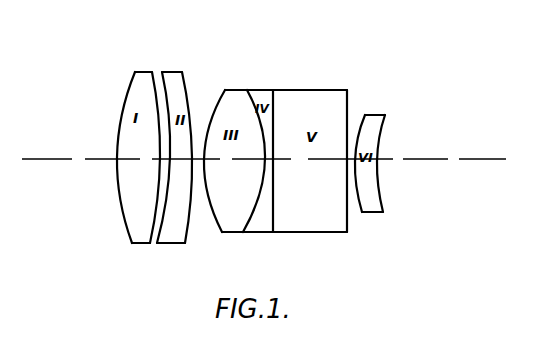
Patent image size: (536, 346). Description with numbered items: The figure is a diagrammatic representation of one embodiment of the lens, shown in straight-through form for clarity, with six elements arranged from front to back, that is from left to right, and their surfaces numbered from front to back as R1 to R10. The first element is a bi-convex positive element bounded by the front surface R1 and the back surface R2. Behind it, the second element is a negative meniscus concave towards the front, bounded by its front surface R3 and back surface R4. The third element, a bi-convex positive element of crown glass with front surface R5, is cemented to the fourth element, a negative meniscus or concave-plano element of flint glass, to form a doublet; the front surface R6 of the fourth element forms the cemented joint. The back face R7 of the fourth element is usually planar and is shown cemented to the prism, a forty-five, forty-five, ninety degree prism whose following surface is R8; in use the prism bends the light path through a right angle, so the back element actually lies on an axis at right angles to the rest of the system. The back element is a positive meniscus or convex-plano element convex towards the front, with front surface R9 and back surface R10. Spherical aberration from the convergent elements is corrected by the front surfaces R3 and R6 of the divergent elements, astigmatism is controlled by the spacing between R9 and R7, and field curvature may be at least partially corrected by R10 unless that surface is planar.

The front surface of element I R1 is at (133, 88).
The back surface of element I R2 is at (152, 73).
The front surface of element II R3 is at (158, 244).
The back surface of element II R4 is at (185, 244).
The front surface of element III R5 is at (221, 92).
The front surface of element IV R6 is at (250, 90).
The back surface of element IV R7 is at (273, 233).
The back surface of prism V R8 is at (347, 233).
The front surface of element VI R9 is at (357, 124).
The back surface of element VI R10 is at (384, 126).